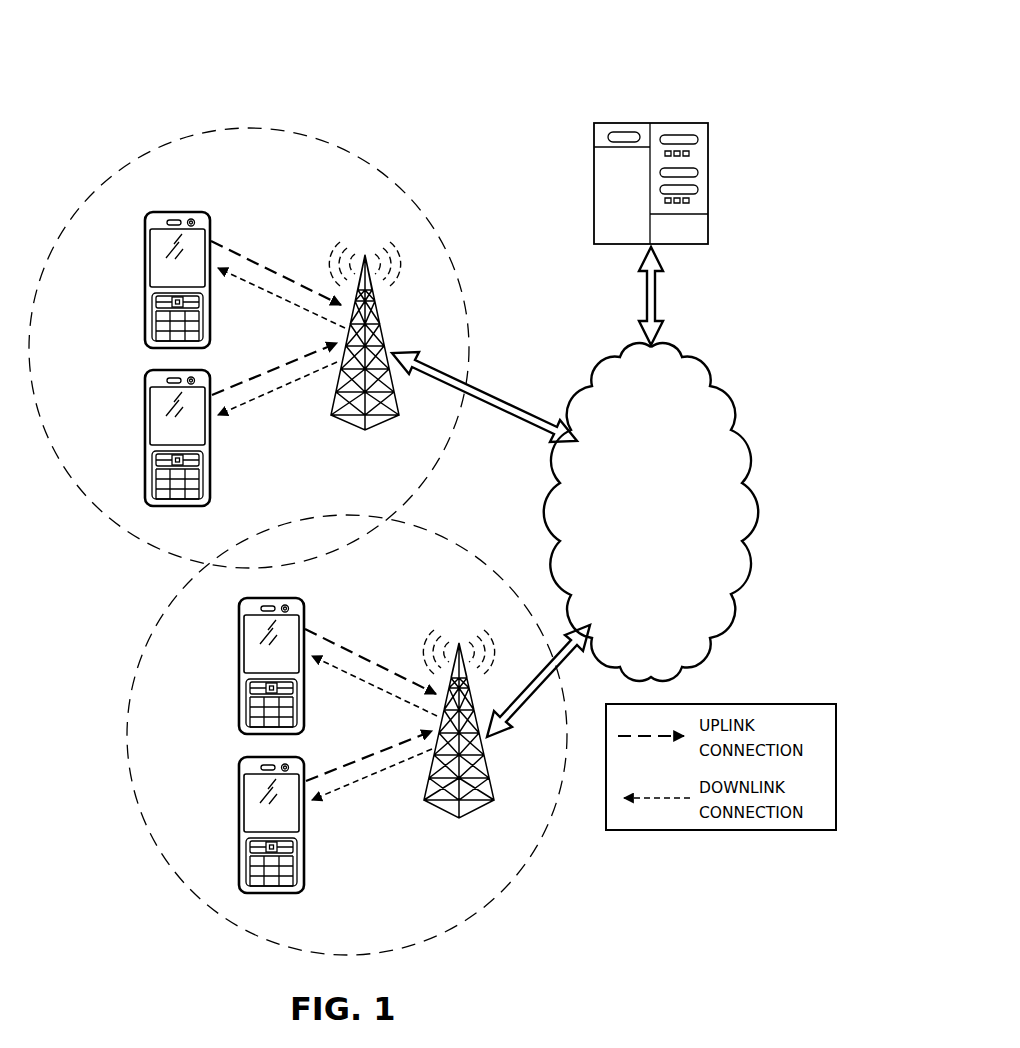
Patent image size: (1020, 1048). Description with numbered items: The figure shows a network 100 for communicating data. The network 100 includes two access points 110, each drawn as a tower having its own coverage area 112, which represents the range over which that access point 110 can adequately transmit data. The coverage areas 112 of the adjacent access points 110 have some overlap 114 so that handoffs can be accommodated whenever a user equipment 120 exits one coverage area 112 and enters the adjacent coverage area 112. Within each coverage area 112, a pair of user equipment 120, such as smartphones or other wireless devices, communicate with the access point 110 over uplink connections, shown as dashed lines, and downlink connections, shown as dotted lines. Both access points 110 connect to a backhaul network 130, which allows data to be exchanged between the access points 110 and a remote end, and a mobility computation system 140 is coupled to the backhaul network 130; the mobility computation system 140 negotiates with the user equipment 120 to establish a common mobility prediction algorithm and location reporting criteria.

The network 100 is at (733, 63).
The access point 110 is at (380, 420).
The coverage area 112 is at (146, 151).
The overlap 114 is at (281, 546).
The user equipment 120 is at (145, 281).
The backhaul network 130 is at (632, 560).
The mobility computation system 140 is at (709, 185).